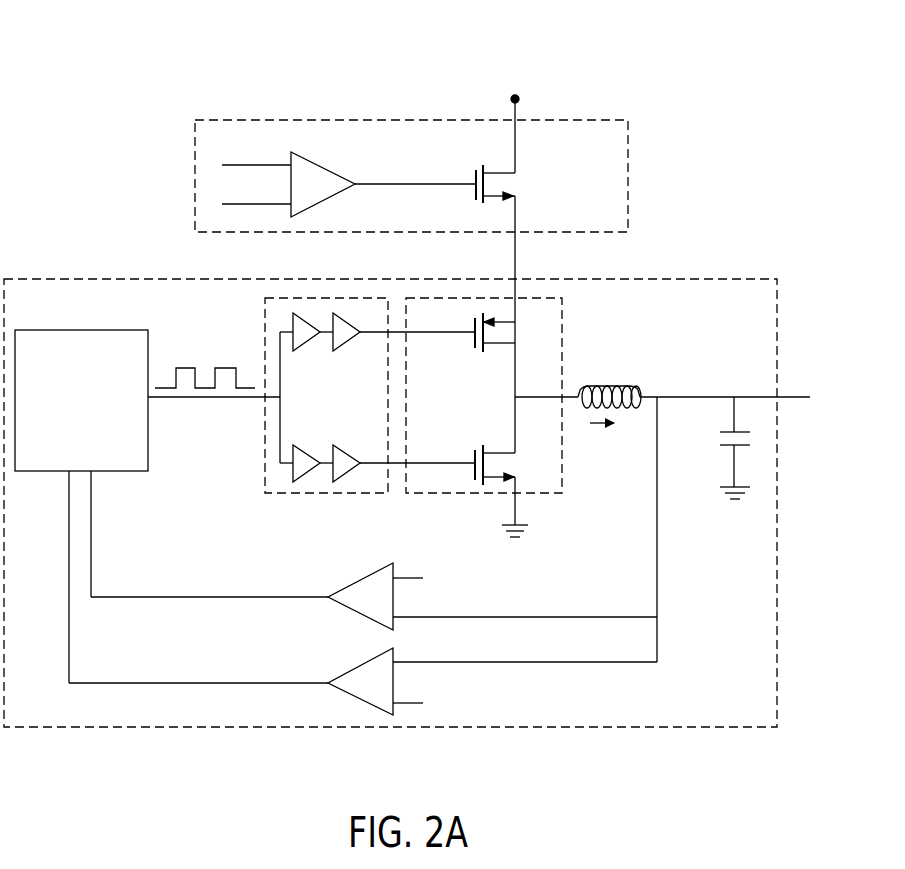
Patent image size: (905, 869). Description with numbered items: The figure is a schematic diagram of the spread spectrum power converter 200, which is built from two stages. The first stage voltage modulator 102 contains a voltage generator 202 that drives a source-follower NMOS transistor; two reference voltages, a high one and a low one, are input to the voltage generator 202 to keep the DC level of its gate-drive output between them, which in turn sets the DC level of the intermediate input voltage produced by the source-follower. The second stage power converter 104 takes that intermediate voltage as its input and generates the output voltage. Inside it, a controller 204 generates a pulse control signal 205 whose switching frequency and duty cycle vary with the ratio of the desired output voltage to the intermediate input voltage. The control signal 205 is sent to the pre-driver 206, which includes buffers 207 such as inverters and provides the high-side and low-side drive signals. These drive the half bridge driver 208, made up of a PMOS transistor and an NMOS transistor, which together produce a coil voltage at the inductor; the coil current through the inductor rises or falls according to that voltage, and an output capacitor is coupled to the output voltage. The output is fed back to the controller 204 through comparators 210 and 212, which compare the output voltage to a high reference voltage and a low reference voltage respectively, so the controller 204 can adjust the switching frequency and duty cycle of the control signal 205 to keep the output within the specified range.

The spread spectrum power converter 200 is at (88, 77).
The first stage voltage modulator 102 is at (604, 117).
The second stage power converter 104 is at (722, 276).
The voltage generator 202 is at (308, 161).
The controller 204 is at (97, 413).
The control signal 205 is at (205, 400).
The pre-driver 206 is at (263, 323).
The buffers 207 is at (300, 352).
The half bridge driver 208 is at (563, 338).
The comparator 210 is at (356, 612).
The comparator 212 is at (355, 694).